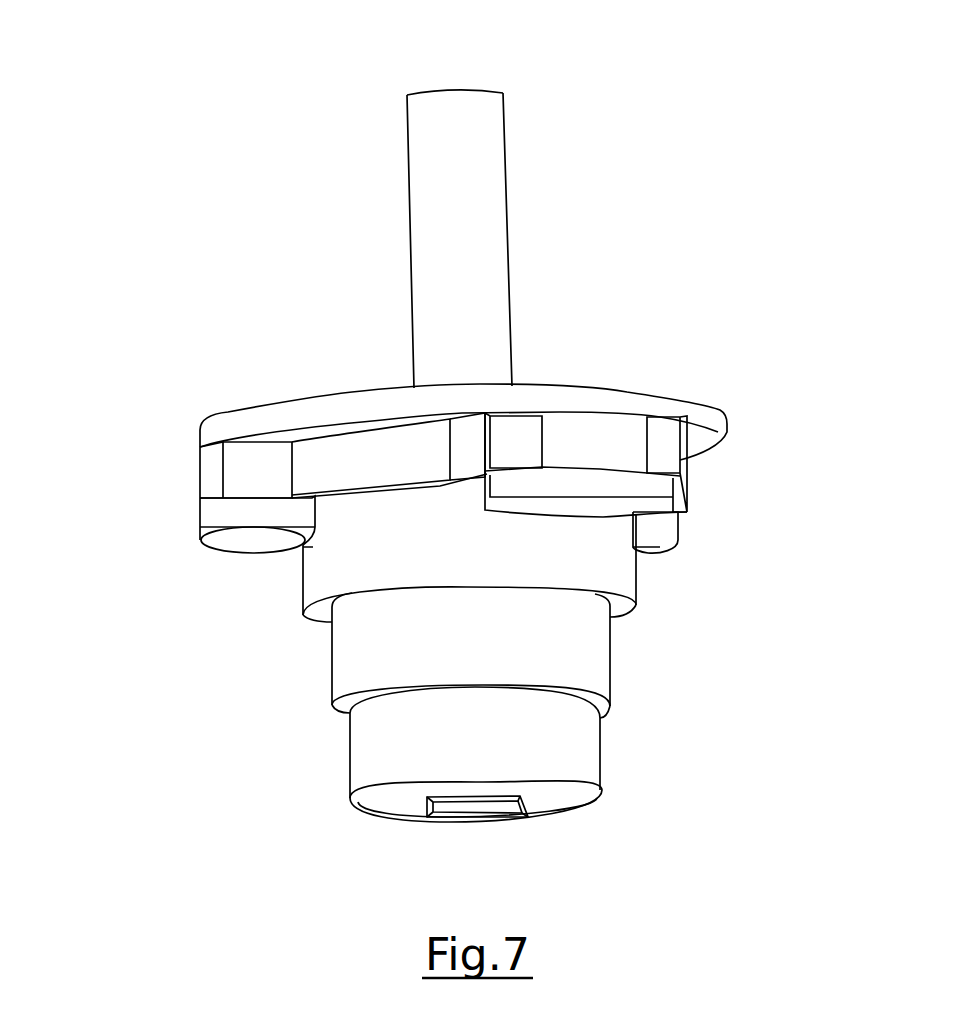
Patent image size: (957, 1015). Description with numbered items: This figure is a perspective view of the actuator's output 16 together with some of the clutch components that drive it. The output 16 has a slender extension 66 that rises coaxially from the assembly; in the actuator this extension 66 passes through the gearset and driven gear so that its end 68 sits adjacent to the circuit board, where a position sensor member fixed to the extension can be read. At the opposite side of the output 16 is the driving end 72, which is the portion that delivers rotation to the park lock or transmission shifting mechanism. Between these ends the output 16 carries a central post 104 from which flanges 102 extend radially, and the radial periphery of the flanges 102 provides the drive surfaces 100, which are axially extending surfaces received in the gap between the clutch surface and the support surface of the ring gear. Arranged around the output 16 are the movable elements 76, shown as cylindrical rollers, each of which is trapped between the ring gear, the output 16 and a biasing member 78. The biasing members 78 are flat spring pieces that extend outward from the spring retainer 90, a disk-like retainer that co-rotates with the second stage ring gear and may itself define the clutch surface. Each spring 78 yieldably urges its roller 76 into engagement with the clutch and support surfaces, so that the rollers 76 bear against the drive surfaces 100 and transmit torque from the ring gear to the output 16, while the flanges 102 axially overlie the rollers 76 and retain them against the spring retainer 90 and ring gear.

The output 16 is at (626, 691).
The extension 66 is at (493, 197).
The end 68 is at (488, 88).
The driving end 72 is at (557, 805).
The movable elements 76 is at (660, 445).
The biasing members 78 is at (467, 447).
The spring retainer 90 is at (720, 421).
The drive surfaces 100 is at (597, 482).
The flanges 102 is at (660, 538).
The central post 104 is at (555, 740).